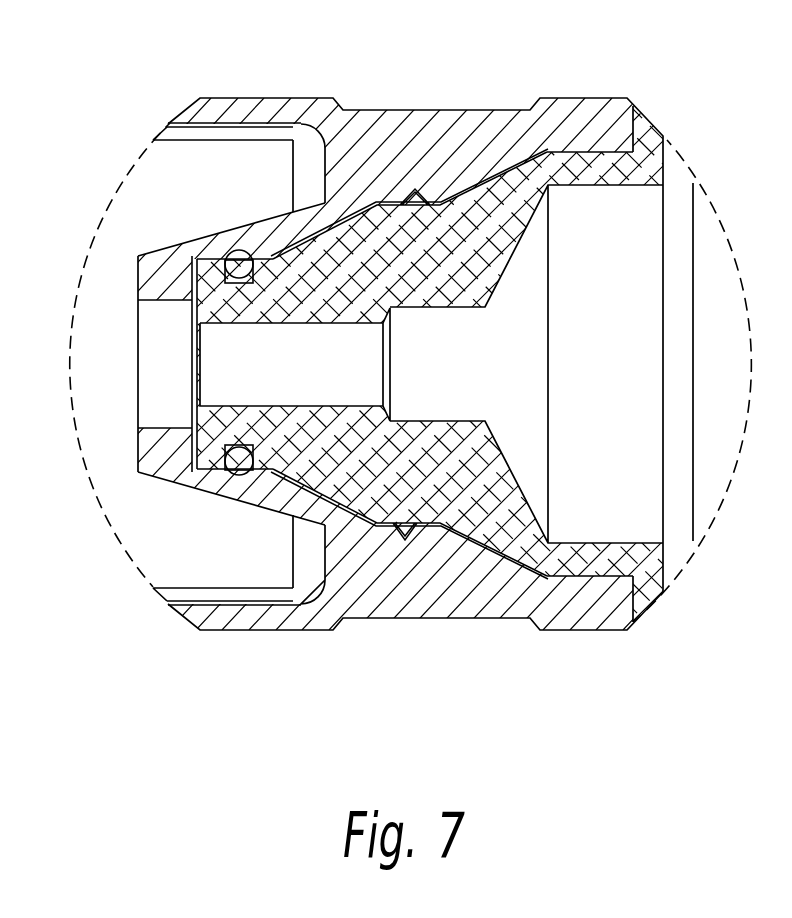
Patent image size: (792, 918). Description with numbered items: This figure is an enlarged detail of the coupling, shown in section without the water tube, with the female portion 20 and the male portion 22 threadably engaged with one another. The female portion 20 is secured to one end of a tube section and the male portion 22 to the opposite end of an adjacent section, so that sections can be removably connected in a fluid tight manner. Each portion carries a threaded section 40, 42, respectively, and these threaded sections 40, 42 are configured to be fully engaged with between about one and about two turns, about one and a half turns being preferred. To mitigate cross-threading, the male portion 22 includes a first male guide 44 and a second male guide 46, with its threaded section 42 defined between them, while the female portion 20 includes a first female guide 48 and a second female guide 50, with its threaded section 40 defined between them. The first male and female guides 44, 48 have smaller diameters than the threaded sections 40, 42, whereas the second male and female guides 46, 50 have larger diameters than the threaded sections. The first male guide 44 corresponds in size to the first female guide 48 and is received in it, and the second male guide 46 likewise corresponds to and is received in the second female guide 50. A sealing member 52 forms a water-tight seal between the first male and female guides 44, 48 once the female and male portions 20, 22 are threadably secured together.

The female portion 20 is at (232, 110).
The male portion 22 is at (664, 139).
The threaded section 40 is at (415, 188).
The threaded section 42 is at (415, 188).
The first male guide 44 is at (225, 258).
The second male guide 46 is at (620, 152).
The first female guide 48 is at (193, 262).
The second female guide 50 is at (616, 150).
The sealing member 52 is at (238, 472).